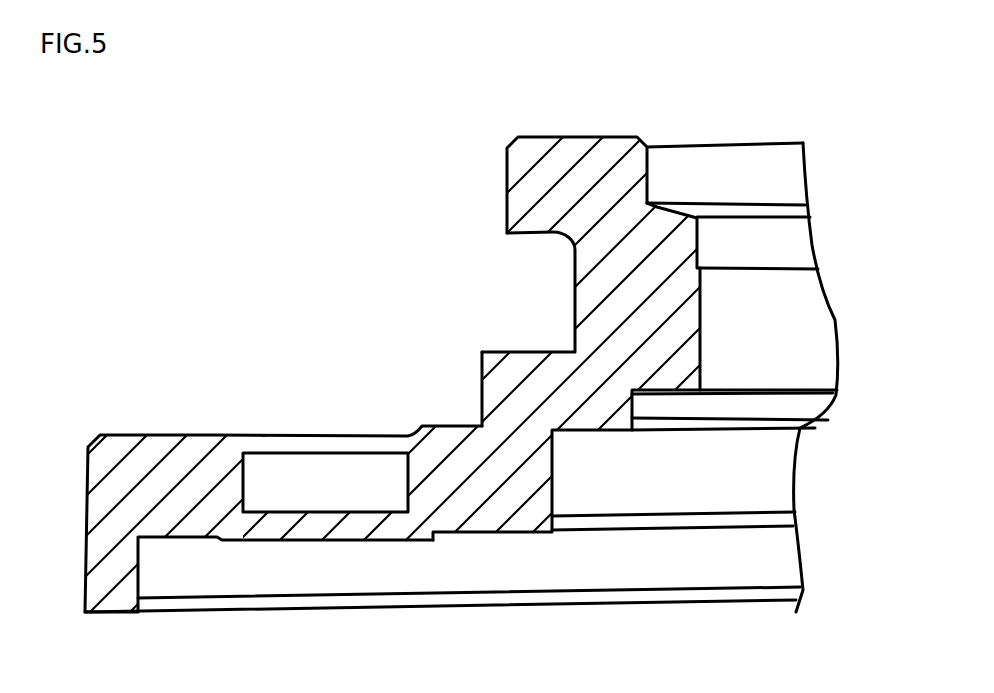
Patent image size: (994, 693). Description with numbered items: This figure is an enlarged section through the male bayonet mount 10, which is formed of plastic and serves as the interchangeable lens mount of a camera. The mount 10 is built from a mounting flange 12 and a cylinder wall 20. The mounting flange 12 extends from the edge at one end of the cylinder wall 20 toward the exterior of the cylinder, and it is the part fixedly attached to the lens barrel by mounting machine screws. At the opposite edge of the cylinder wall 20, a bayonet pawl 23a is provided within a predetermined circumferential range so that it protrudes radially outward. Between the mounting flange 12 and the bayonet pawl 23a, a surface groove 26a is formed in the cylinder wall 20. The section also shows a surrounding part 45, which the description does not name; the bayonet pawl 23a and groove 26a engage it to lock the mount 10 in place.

The mount 10 is at (372, 366).
The mounting flange 12 is at (162, 434).
The cylinder wall 20 is at (574, 134).
The bayonet pawl 23a is at (524, 187).
The surface groove 26a is at (535, 281).
The cylinder liner 45 is at (723, 305).